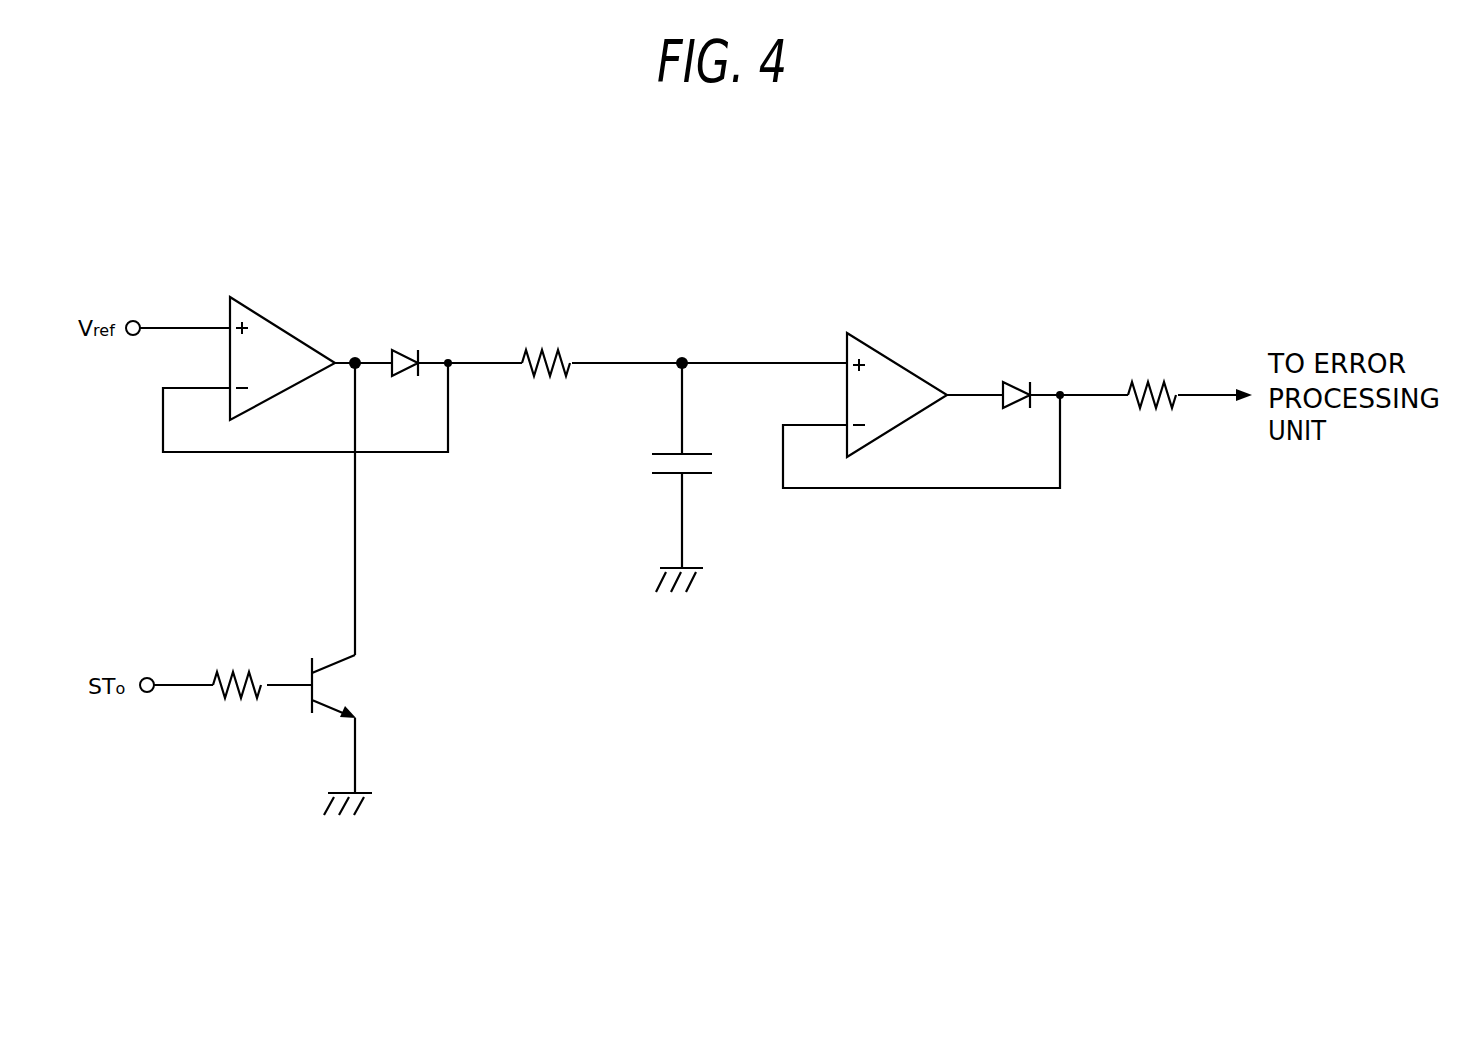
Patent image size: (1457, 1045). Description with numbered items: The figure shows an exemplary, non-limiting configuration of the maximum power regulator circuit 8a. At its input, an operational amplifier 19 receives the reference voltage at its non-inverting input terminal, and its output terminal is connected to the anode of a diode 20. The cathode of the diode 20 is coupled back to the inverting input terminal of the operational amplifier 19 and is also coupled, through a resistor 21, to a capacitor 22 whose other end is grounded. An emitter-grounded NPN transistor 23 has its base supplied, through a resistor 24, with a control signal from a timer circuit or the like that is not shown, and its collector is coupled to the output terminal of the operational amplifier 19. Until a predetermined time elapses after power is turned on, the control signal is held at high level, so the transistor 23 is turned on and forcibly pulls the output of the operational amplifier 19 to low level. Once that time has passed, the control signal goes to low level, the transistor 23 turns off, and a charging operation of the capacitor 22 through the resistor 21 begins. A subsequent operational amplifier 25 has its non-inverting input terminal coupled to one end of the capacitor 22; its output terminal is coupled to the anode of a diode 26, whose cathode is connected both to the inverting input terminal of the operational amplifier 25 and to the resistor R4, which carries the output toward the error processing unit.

The maximum power regulator circuit 8a is at (633, 268).
The operational amplifier 19 is at (290, 332).
The diode 20 is at (398, 350).
The resistor 21 is at (537, 380).
The capacitor 22 is at (660, 476).
The NPN transistor 23 is at (310, 705).
The resistor 24 is at (250, 672).
The operational amplifier 25 is at (905, 365).
The diode 26 is at (1013, 383).
The resistor R4 is at (1148, 383).